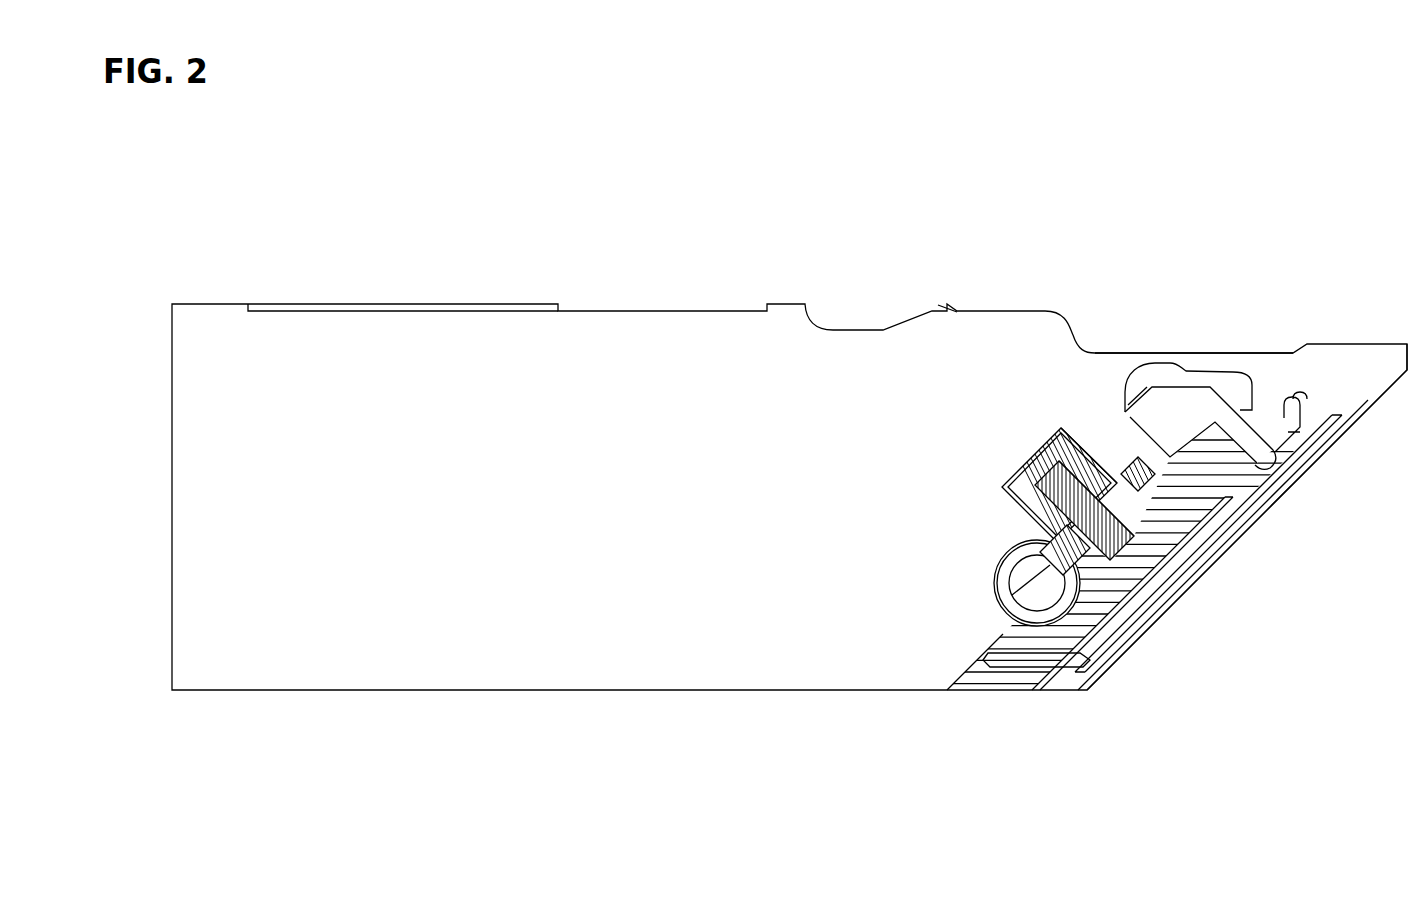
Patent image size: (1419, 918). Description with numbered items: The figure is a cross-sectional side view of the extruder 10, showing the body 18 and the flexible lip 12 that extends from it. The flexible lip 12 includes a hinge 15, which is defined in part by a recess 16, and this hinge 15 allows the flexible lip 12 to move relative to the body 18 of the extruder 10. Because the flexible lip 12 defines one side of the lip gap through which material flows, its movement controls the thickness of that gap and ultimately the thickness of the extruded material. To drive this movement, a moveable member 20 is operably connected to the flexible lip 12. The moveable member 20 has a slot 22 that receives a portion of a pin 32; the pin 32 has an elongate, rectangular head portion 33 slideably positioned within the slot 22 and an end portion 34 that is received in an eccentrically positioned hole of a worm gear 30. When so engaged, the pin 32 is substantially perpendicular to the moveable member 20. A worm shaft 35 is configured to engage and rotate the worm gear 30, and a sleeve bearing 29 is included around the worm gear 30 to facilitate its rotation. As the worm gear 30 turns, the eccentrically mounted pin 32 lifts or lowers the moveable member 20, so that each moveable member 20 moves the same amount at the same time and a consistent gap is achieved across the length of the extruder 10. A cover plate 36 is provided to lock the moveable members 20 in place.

The extruder 10 is at (735, 293).
The flexible lip 12 is at (1358, 344).
The hinge 15 is at (1158, 352).
The recess 16 is at (1172, 374).
The body 18 is at (494, 350).
The moveable member 20 is at (1295, 447).
The slot 22 is at (1125, 527).
The sleeve bearing 29 is at (1022, 505).
The worm gear 30 is at (1060, 445).
The pin 32 is at (1105, 552).
The head portion 33 is at (1123, 548).
The end portion 34 is at (1043, 468).
The worm shaft 35 is at (1050, 610).
The cover plate 36 is at (1222, 549).